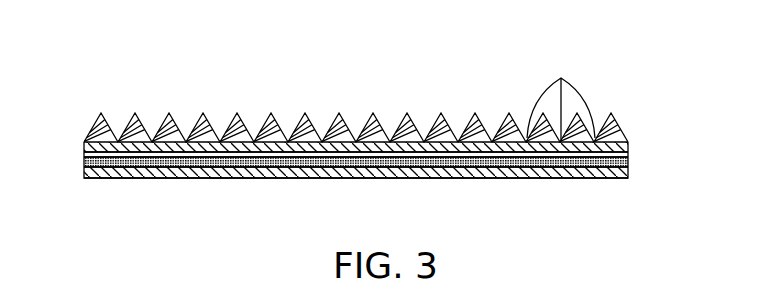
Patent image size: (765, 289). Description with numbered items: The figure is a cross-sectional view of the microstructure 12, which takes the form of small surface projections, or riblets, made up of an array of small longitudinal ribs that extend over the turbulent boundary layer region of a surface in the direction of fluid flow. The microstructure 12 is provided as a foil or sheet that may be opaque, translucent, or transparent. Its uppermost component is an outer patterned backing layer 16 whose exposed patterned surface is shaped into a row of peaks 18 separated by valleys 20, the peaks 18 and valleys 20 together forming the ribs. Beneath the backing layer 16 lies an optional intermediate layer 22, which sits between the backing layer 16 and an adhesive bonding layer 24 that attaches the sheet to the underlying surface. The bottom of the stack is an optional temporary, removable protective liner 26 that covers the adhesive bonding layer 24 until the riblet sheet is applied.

The microstructure 12 is at (652, 53).
The outer patterned backing layer 16 is at (617, 139).
The peaks 18 is at (475, 113).
The valleys 20 is at (561, 93).
The intermediate layer 22 is at (628, 157).
The adhesive bonding layer 24 is at (83, 163).
The protective liner 26 is at (544, 178).